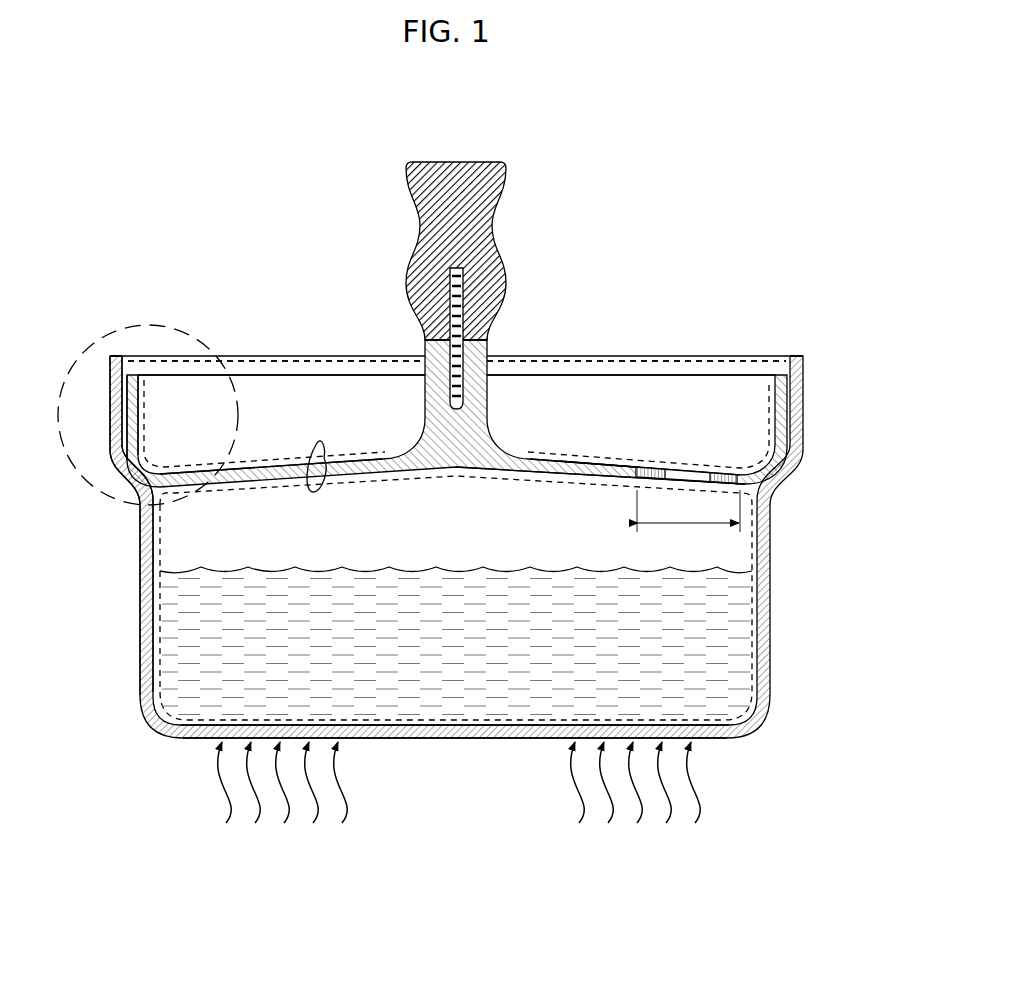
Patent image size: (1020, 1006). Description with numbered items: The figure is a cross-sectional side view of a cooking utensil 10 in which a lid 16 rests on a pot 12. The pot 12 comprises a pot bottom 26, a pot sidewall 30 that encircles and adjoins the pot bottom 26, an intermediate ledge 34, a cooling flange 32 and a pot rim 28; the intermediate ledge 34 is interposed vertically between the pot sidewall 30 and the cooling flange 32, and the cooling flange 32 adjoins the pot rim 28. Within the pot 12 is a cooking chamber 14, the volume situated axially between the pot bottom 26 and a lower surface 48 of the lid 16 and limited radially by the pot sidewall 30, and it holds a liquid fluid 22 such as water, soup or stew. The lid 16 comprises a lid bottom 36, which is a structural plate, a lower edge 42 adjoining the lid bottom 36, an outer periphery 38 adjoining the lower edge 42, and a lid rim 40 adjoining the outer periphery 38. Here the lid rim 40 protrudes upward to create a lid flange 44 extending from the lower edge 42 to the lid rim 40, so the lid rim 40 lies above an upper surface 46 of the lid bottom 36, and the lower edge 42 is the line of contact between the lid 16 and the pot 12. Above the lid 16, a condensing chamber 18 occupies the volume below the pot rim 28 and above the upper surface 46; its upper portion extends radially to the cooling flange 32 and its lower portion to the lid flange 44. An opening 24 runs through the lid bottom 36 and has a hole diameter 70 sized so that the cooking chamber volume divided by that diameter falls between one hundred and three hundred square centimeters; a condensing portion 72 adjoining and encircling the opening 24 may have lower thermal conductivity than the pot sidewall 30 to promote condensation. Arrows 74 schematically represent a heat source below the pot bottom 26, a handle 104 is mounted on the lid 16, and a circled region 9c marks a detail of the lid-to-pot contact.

The cooking utensil 10 is at (704, 211).
The pot 12 is at (143, 603).
The cooking chamber 14 is at (398, 481).
The lid 16 is at (580, 462).
The condensing chamber 18 is at (641, 358).
The liquid fluid 22 is at (360, 569).
The opening 24 is at (692, 478).
The pot bottom 26 is at (484, 740).
The pot rim 28 is at (568, 355).
The pot sidewall 30 is at (143, 542).
The cooling flange 32 is at (109, 408).
The intermediate ledge 34 is at (100, 518).
The lid bottom 36 is at (324, 458).
The outer periphery 38 is at (792, 406).
The lid rim 40 is at (290, 374).
The lower edge 42 is at (119, 489).
The lid flange 44 is at (145, 407).
The upper surface 46 is at (263, 467).
The lower surface 48 is at (545, 488).
The hole diameter 70 is at (671, 527).
The condensing portion 72 is at (612, 466).
The arrows 74 is at (345, 782).
The handle 104 is at (446, 161).
The detail region of FIG. 9c is at (167, 327).